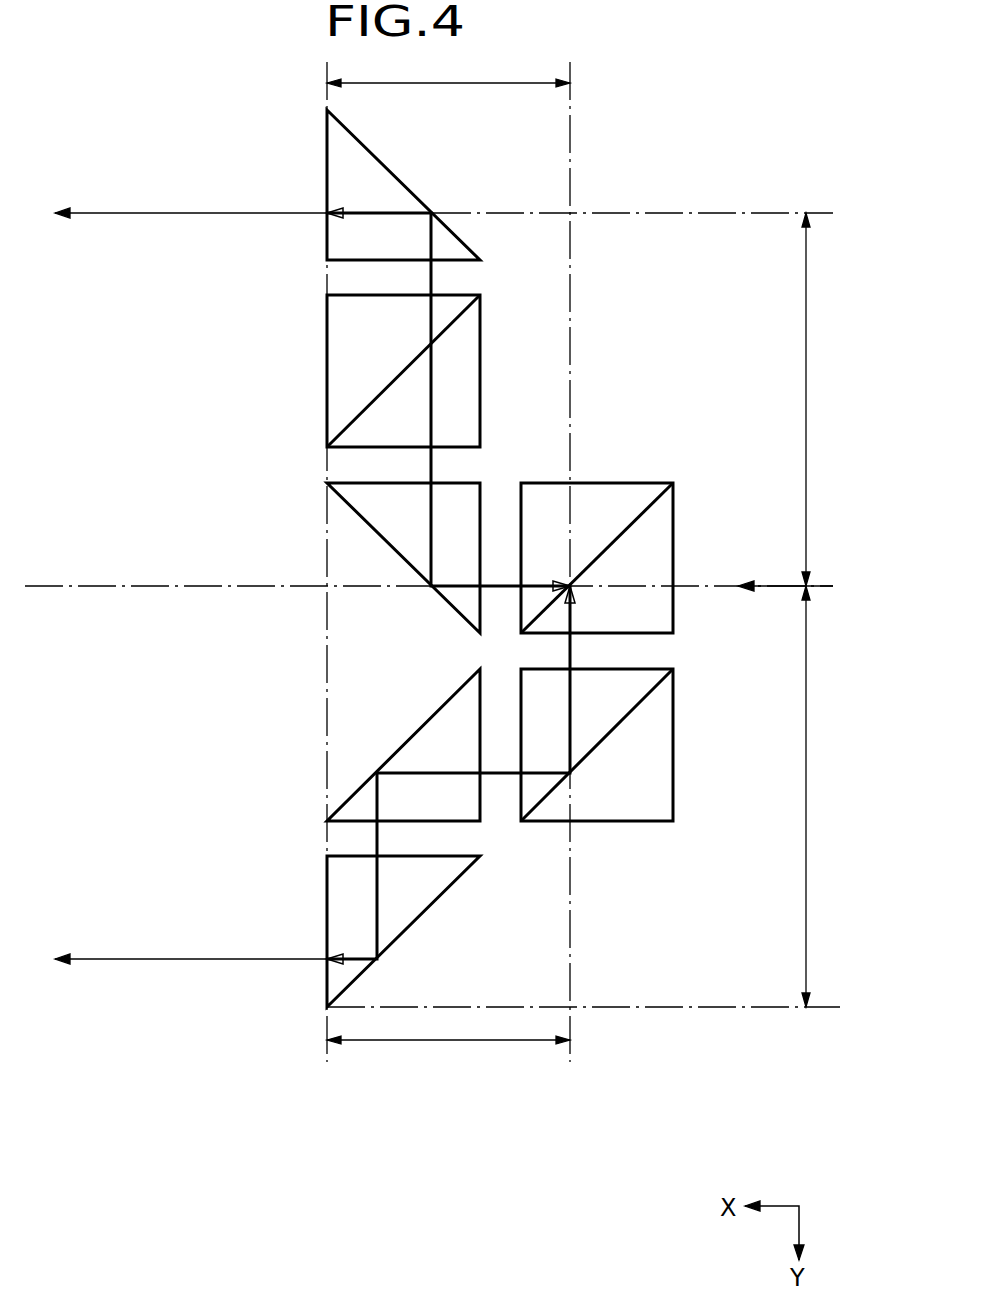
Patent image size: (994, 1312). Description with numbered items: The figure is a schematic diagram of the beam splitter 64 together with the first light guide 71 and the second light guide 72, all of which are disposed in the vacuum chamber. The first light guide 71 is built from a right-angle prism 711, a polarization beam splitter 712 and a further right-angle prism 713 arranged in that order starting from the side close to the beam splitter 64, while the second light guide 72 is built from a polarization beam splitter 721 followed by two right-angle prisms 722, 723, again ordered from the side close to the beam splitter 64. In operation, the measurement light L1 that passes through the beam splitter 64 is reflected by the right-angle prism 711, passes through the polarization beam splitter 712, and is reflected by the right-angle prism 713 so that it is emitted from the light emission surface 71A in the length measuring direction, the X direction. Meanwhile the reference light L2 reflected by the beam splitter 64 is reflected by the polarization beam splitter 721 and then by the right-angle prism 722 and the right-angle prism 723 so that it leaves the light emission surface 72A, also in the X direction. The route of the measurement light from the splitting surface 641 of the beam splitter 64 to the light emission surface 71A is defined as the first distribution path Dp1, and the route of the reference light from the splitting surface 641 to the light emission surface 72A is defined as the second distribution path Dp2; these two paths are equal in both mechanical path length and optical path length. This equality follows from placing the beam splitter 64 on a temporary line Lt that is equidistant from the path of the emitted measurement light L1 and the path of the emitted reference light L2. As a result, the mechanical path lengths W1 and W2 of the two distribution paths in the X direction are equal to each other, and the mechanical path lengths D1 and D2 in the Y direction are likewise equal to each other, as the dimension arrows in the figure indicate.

The first light guide 71 is at (630, 368).
The light emission surface 71A is at (327, 145).
The right-angle prism 711 is at (350, 505).
The polarization beam splitter 712 is at (327, 372).
The right-angle prism 713 is at (340, 235).
The second light guide 72 is at (607, 857).
The light emission surface 72A is at (327, 993).
The polarization beam splitter 721 is at (673, 745).
The right-angle prism 722 is at (480, 821).
The right-angle prism 723 is at (420, 918).
The beam splitter 64 is at (602, 483).
The splitting surface 641 is at (650, 504).
The measurement light L1 is at (165, 212).
The reference light L2 is at (165, 958).
The temporary line Lt is at (165, 585).
The first distribution path Dp1 is at (433, 277).
The second distribution path Dp2 is at (377, 836).
The mechanical path length in the X direction W1 is at (448, 69).
The mechanical path length in the X direction W2 is at (448, 1057).
The mechanical path length in the Y direction D1 is at (822, 399).
The mechanical path length in the Y direction D2 is at (825, 796).